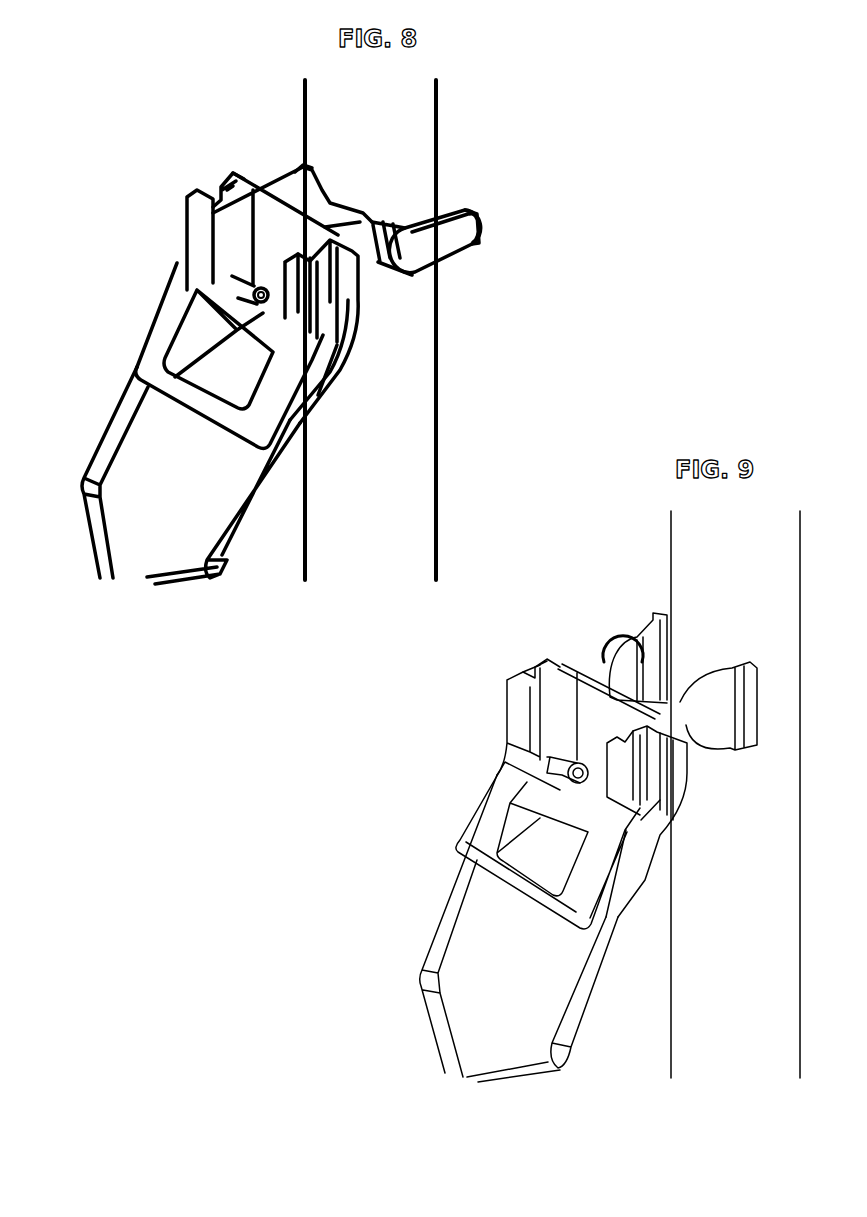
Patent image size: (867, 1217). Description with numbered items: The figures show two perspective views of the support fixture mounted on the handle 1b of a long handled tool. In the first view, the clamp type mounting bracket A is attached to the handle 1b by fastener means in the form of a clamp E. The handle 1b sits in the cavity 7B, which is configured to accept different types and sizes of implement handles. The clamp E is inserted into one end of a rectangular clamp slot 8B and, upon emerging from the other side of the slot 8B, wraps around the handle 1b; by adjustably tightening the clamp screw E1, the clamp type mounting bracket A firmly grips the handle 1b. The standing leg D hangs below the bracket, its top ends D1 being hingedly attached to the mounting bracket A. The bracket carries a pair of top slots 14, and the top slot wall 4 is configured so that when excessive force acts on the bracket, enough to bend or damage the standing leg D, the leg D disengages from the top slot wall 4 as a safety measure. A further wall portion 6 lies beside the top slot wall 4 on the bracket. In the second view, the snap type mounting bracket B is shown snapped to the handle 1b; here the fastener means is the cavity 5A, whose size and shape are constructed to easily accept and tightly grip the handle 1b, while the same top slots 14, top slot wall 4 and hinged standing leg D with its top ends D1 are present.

In FIG. 8, the top slot 14 is at (213, 190).
In FIG. 9, the top slot 14 is at (541, 668).
In FIG. 8, the cavity 7B is at (323, 195).
In FIG. 8, the clamp slot 8B is at (373, 223).
In FIG. 8, the clamp screw E1 is at (482, 230).
In FIG. 8, the clamp E is at (463, 263).
In FIG. 8, the clamp type mounting bracket A is at (270, 360).
In FIG. 8, the top end D1 is at (223, 290).
In FIG. 9, the top end D1 is at (567, 770).
In FIG. 8, the implement handle 1b is at (407, 370).
In FIG. 9, the implement handle 1b is at (687, 1045).
In FIG. 8, the top slot wall 4 is at (337, 378).
In FIG. 9, the top slot wall 4 is at (647, 821).
In FIG. 8, the side wall 6 is at (318, 416).
In FIG. 9, the side wall 6 is at (633, 858).
In FIG. 8, the standing leg D is at (80, 527).
In FIG. 9, the standing leg D is at (519, 928).
In FIG. 9, the cavity 5A is at (697, 690).
In FIG. 9, the snap type mounting bracket B is at (614, 828).